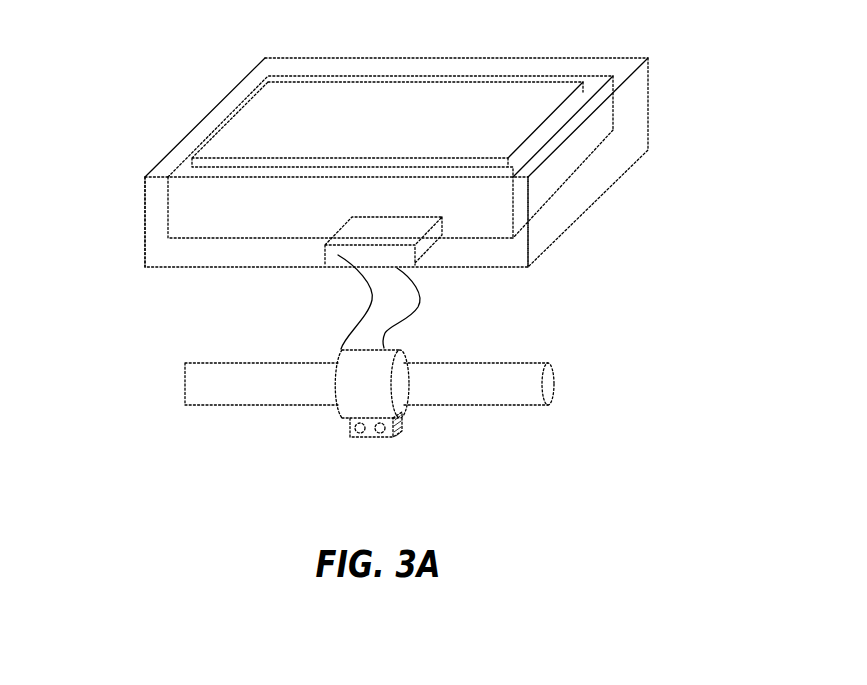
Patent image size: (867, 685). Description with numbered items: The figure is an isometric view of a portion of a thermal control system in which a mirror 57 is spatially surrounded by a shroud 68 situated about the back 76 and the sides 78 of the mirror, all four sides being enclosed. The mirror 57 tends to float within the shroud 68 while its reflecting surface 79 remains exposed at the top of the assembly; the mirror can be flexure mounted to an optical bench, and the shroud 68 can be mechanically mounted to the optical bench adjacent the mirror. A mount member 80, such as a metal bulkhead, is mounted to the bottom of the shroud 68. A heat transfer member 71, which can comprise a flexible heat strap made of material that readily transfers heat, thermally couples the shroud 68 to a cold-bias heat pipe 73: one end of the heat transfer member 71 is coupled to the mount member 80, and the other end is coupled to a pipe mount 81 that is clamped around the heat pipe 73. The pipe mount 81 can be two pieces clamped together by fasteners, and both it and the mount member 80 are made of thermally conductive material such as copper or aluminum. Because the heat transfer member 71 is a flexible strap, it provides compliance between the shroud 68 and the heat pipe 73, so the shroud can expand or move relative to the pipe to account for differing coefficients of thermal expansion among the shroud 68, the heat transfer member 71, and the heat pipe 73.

The mirror 57 is at (303, 108).
The shroud 68 is at (190, 138).
The heat transfer member 71 is at (393, 325).
The cold-bias heat pipe 73 is at (230, 388).
The back 76 is at (228, 245).
The sides 78 is at (563, 172).
The reflecting surface 79 is at (450, 108).
The mount member 80 is at (338, 256).
The pipe mount 81 is at (357, 388).